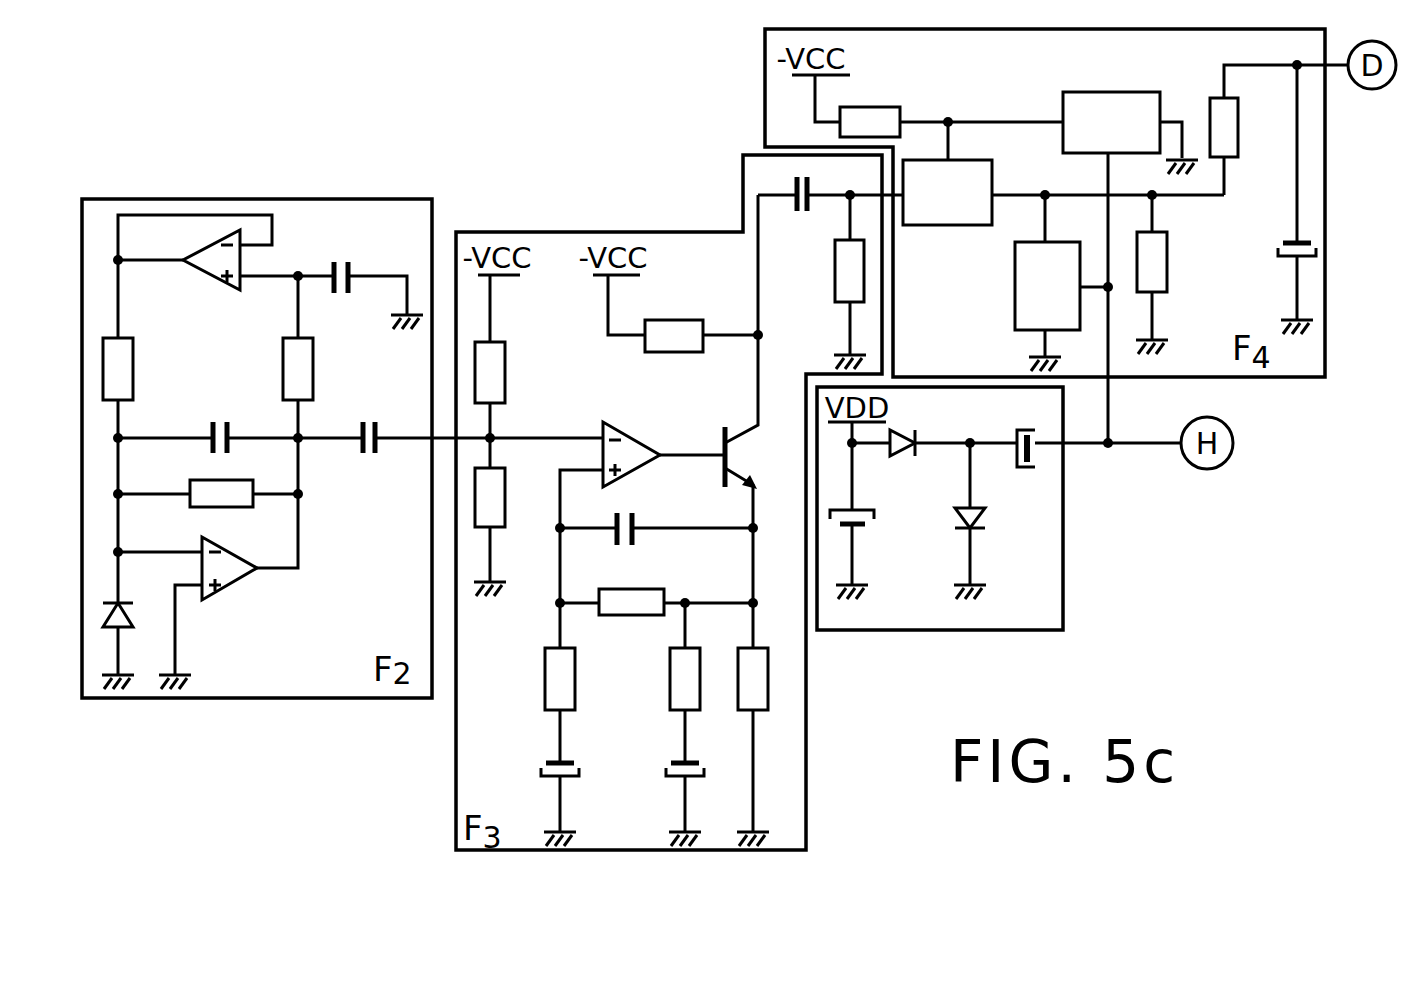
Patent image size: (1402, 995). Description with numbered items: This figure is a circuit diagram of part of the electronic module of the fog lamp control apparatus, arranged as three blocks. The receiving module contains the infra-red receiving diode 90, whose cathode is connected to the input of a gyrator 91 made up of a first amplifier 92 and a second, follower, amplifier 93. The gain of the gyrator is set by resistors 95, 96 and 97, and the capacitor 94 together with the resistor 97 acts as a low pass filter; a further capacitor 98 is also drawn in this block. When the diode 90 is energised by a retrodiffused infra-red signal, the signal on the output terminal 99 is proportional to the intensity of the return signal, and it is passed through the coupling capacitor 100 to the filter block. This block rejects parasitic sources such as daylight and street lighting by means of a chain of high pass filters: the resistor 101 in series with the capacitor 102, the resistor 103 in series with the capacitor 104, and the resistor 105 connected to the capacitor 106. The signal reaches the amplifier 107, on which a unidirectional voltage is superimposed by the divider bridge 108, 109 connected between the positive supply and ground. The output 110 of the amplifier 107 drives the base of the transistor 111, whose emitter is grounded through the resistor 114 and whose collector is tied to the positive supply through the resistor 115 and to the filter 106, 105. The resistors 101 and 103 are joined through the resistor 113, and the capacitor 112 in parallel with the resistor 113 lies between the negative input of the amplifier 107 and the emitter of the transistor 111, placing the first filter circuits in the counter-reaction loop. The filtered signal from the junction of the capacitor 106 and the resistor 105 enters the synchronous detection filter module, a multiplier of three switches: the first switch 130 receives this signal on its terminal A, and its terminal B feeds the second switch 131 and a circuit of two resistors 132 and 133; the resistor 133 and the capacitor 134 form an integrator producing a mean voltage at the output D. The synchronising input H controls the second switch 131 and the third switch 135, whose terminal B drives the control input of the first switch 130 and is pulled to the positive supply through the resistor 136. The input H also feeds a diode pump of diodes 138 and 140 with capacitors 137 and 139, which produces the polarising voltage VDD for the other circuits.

The infra-red receiving diode 90 is at (128, 612).
The gyrator 91 is at (212, 378).
The first amplifier 92 is at (231, 593).
The second follower amplifier 93 is at (217, 278).
The capacitor 94 is at (208, 428).
The resistor 95 is at (133, 372).
The resistor 96 is at (284, 354).
The resistor 97 is at (210, 480).
The capacitor 98 is at (351, 270).
The output terminal 99 is at (303, 445).
The coupling capacitor 100 is at (358, 426).
The resistor 101 is at (542, 689).
The capacitor 102 is at (538, 768).
The resistor 103 is at (668, 692).
The capacitor 104 is at (664, 768).
The resistor 105 is at (834, 257).
The capacitor 106 is at (809, 203).
The amplifier 107 is at (629, 432).
The divider bridge resistor 108 is at (506, 381).
The divider bridge resistor 109 is at (505, 496).
The amplifier output 110 is at (706, 458).
The transistor 111 is at (765, 491).
The capacitor 112 is at (634, 541).
The resistor 113 is at (634, 589).
The resistor 114 is at (738, 683).
The resistor 115 is at (671, 320).
The first switch 130 is at (913, 230).
The second switch 131 is at (1014, 295).
The resistor 132 is at (1168, 283).
The resistor 133 is at (1239, 146).
The capacitor 134 is at (1276, 248).
The third switch 135 is at (1108, 90).
The resistor 136 is at (871, 106).
The capacitor 137 is at (866, 509).
The diode 138 is at (903, 432).
The capacitor 139 is at (1017, 436).
The diode 140 is at (978, 509).